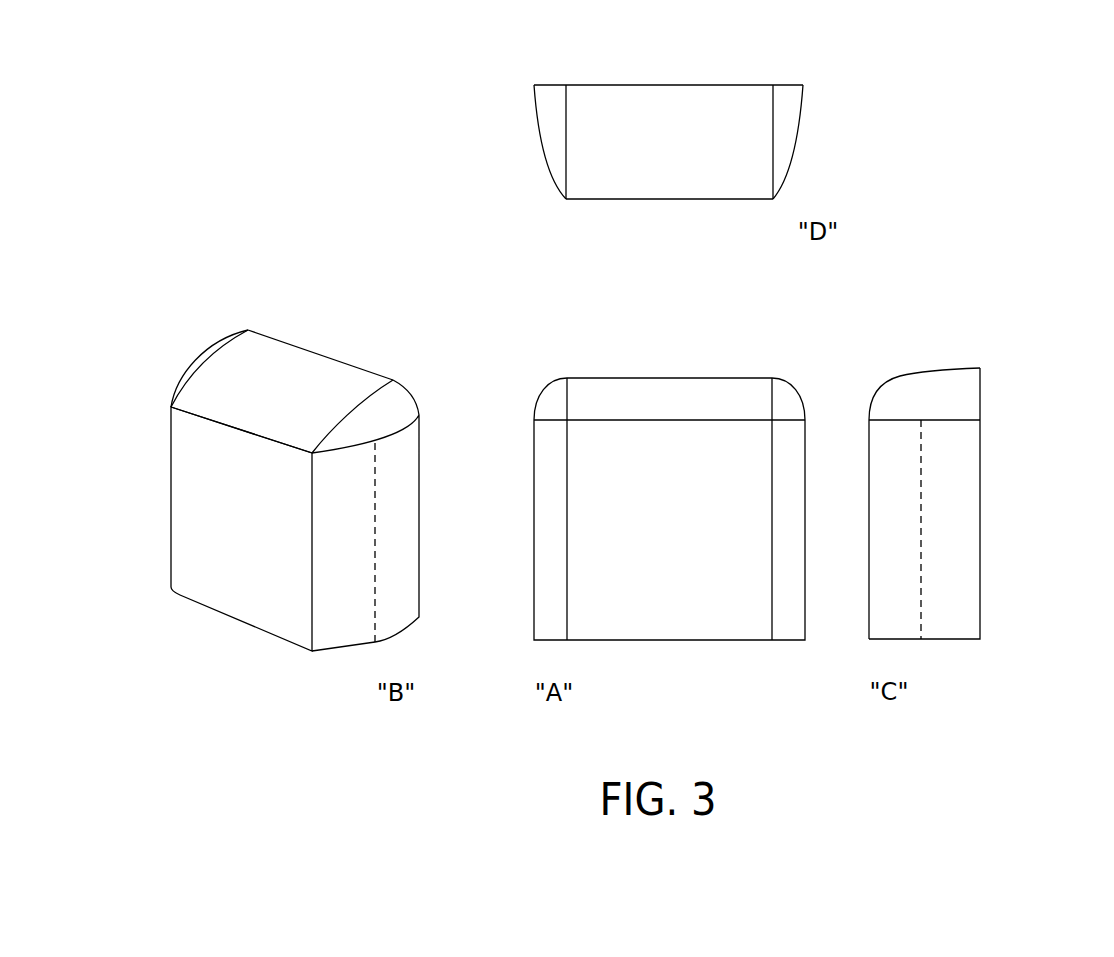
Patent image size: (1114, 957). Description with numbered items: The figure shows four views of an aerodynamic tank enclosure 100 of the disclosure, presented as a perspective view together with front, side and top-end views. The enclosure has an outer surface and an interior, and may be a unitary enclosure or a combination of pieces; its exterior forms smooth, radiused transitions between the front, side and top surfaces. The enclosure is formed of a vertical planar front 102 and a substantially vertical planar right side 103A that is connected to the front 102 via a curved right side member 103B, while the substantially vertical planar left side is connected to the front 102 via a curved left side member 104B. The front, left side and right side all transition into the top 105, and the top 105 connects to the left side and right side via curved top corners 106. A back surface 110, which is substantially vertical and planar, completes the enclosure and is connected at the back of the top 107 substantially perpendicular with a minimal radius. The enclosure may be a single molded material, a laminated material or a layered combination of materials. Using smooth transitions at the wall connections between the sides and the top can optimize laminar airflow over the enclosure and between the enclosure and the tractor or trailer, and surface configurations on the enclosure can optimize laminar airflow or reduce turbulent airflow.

The container blank / box 100 is at (289, 322).
The front 102 is at (200, 518).
The right side 103A is at (403, 482).
The curved right side member 103B is at (342, 640).
The curved left side member 104B is at (552, 578).
The top 105 is at (335, 375).
The curved top corners 106 is at (400, 402).
The back of the top 107 is at (737, 46).
The back surface 110 is at (987, 438).